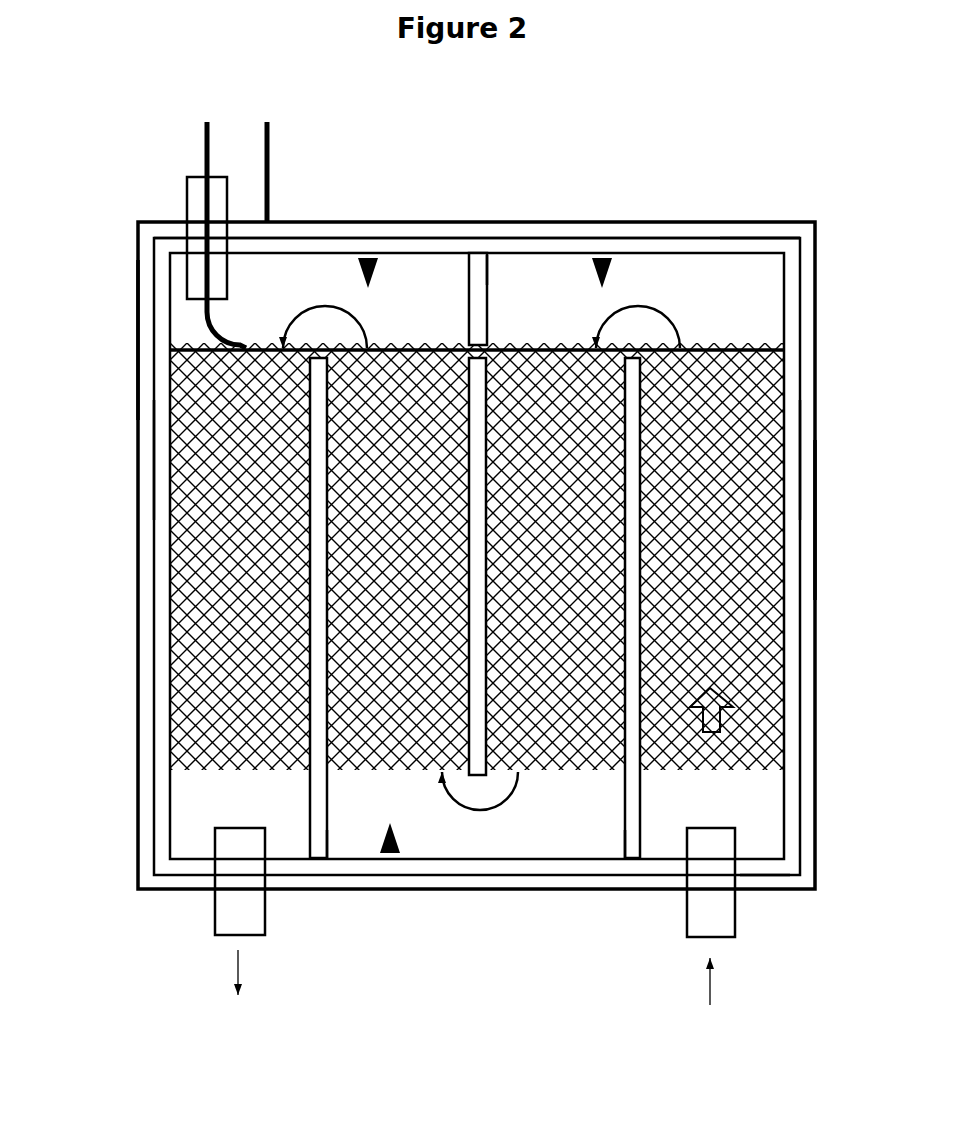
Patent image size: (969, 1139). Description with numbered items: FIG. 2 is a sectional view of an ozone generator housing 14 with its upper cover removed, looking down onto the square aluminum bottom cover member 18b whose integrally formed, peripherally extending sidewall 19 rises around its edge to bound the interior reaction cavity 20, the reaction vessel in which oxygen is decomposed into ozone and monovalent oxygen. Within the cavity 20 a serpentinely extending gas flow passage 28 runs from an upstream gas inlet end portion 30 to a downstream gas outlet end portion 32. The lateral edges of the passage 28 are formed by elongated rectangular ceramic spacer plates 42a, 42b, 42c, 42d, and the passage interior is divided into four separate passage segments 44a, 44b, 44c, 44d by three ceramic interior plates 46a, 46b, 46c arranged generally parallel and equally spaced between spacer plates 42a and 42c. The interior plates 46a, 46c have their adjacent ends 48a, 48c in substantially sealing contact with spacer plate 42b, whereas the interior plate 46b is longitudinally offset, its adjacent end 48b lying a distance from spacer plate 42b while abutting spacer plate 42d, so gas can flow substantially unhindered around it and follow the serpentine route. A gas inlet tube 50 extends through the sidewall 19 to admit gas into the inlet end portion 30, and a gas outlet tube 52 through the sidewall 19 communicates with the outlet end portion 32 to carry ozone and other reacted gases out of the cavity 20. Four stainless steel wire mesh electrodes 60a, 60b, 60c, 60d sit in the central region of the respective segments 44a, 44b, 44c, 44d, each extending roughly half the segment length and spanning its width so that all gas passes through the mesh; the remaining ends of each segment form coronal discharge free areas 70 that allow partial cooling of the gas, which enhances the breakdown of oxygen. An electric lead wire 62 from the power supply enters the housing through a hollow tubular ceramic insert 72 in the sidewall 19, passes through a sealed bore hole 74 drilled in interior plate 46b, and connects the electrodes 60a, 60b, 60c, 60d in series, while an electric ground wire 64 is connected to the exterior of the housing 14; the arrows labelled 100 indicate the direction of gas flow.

The housing 14 is at (95, 176).
The bottom cover member 18b is at (136, 340).
The sidewall 19 is at (828, 519).
The reaction cavity 20 is at (682, 258).
The gas flow passage 28 is at (748, 688).
The upstream gas inlet end portion 30 is at (758, 807).
The downstream gas outlet end portion 32 is at (197, 807).
The spacer plate 42a is at (153, 455).
The spacer plate 42b is at (762, 870).
The spacer plate 42c is at (800, 455).
The spacer plate 42d is at (766, 237).
The passage segment 44a is at (250, 370).
The passage segment 44b is at (405, 370).
The passage segment 44c is at (555, 370).
The passage segment 44d is at (712, 370).
The interior plate 46a is at (330, 845).
The interior plate 46b is at (489, 268).
The interior plate 46c is at (622, 843).
The adjacent end 48a is at (318, 862).
The adjacent end 48b is at (481, 784).
The adjacent end 48c is at (631, 862).
The gas inlet tube 50 is at (739, 923).
The gas outlet tube 52 is at (207, 932).
The wire mesh electrode 60a is at (245, 556).
The wire mesh electrode 60b is at (400, 556).
The wire mesh electrode 60c is at (557, 556).
The wire mesh electrode 60d is at (709, 556).
The electric lead wire 62 is at (207, 118).
The electric ground wire 64 is at (268, 118).
The coronal discharge free area 70 is at (368, 258).
The tubular ceramic insert 72 is at (190, 168).
The bore hole 74 is at (496, 345).
The fluid flow 100 is at (472, 662).